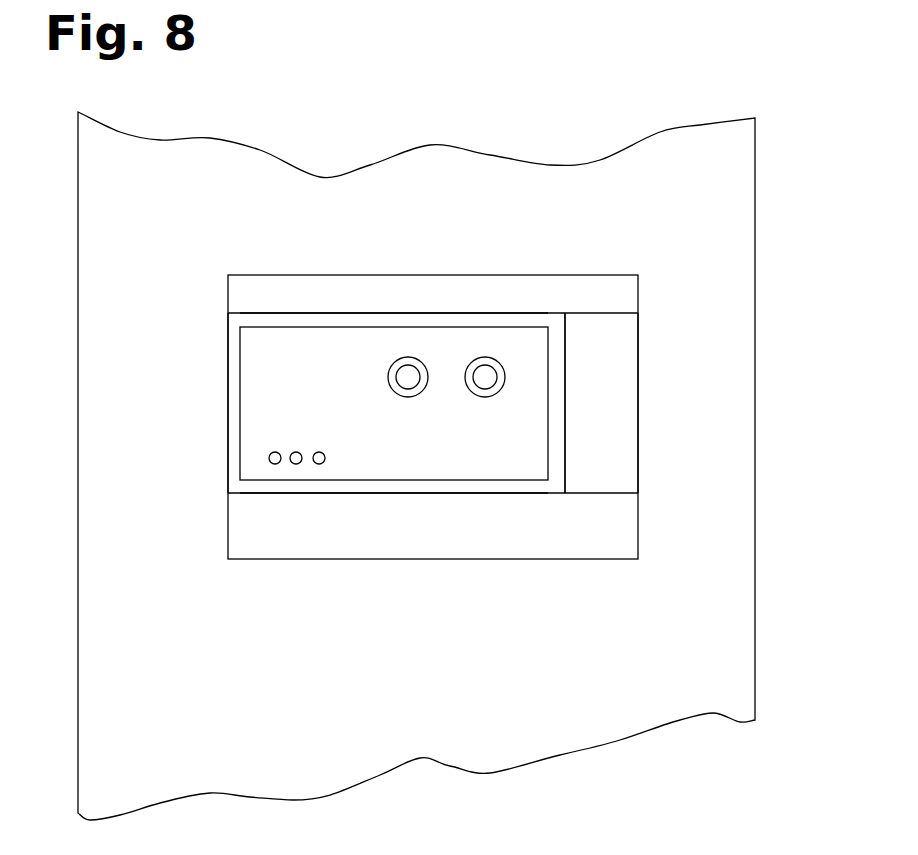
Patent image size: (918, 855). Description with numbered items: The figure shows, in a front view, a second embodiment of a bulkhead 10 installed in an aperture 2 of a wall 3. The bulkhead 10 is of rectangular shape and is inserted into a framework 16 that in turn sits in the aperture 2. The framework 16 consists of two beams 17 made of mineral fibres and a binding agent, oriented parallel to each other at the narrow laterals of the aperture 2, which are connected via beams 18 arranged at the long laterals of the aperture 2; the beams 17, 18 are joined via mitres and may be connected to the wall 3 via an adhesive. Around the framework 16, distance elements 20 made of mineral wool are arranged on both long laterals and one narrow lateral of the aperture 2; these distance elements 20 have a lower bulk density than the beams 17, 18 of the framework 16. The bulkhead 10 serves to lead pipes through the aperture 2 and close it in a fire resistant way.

The aperture 2 is at (535, 559).
The wall 3 is at (712, 200).
The bulkhead 10 is at (655, 408).
The framework 16 is at (228, 428).
The beams 17 is at (240, 363).
The beams 18 is at (440, 318).
The distance elements 20 is at (600, 302).